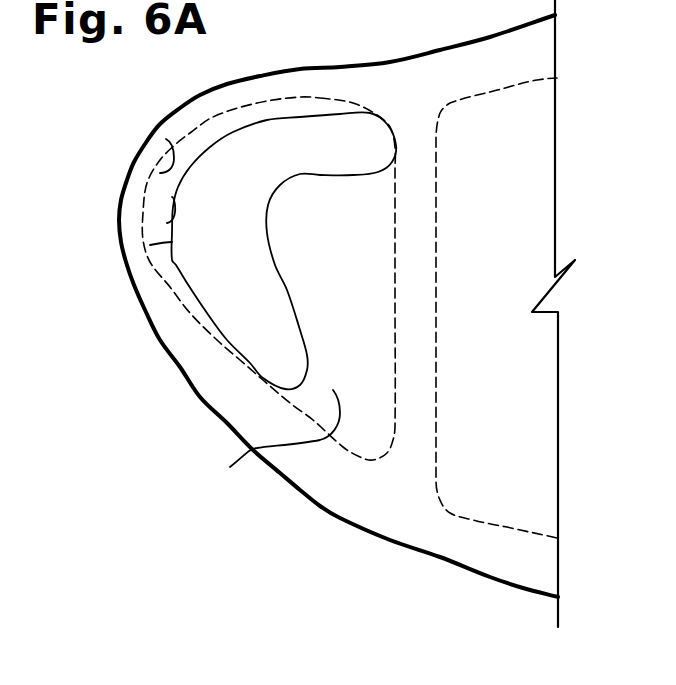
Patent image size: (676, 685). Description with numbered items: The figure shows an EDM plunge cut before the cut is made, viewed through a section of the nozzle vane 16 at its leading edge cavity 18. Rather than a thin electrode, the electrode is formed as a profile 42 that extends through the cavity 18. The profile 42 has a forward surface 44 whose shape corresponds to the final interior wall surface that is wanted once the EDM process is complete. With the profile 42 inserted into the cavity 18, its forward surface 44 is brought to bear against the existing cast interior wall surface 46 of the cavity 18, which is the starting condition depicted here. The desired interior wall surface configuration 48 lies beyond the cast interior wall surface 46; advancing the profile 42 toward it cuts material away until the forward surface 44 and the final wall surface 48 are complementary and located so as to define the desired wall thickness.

The nozzle vane 16 is at (362, 530).
The leading edge cavity 18 is at (270, 439).
The profile 42 is at (258, 285).
The forward surface 44 is at (150, 245).
The cast interior wall surface 46 is at (167, 223).
The desired interior wall surface configuration 48 is at (160, 173).